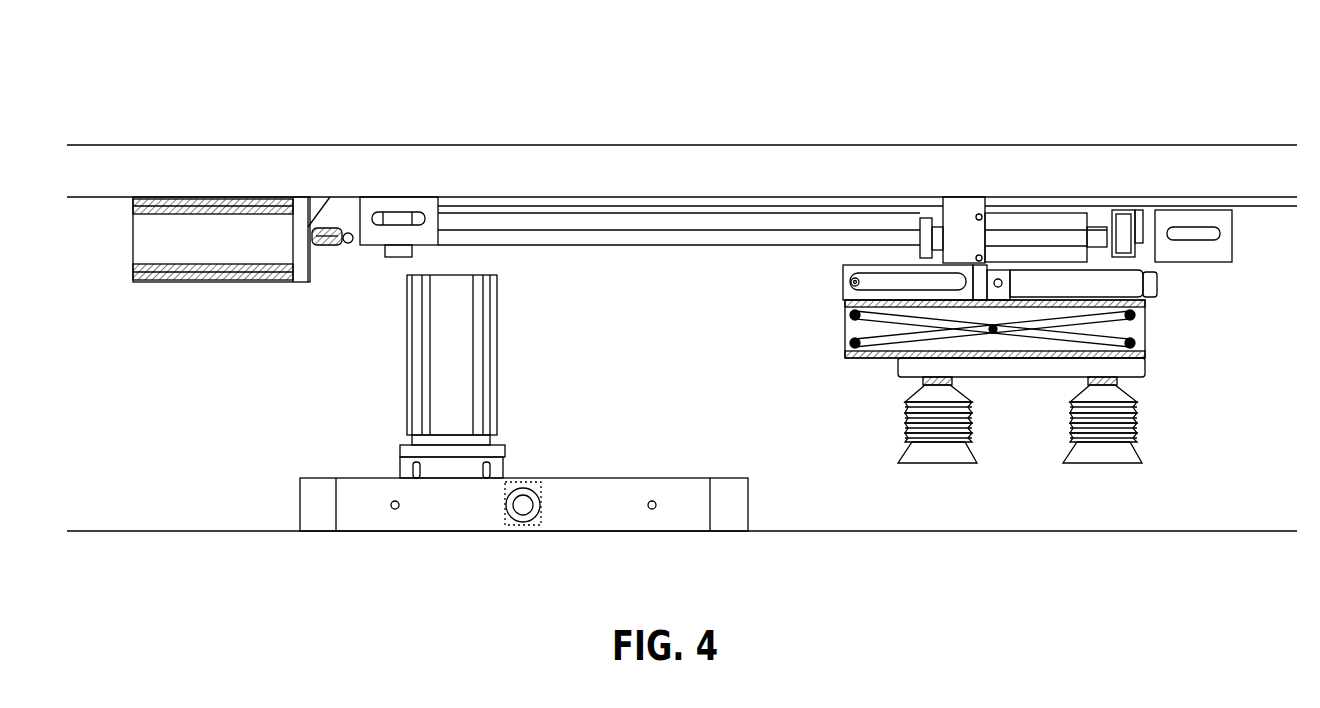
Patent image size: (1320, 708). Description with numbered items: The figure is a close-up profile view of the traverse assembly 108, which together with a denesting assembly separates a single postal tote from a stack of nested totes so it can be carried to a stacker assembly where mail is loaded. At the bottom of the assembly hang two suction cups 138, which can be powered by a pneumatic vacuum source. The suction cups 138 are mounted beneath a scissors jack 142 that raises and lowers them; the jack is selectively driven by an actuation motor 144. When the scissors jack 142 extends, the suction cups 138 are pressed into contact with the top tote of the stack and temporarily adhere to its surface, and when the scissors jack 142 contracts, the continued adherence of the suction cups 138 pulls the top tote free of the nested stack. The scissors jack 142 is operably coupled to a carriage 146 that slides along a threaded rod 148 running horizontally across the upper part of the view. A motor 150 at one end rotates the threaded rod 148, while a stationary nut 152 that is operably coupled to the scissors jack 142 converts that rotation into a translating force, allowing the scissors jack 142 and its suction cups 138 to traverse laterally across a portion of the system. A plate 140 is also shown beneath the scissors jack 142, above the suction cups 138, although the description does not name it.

The traverse assembly 108 is at (775, 80).
The suction cups 138 is at (937, 455).
The scissor lift mechanism 140 is at (1147, 357).
The scissors jack 142 is at (917, 257).
The actuation motor 144 is at (1097, 287).
The carriage 146 is at (980, 213).
The threaded rod 148 is at (511, 237).
The motor 150 is at (217, 240).
The stationary nut 152 is at (962, 237).